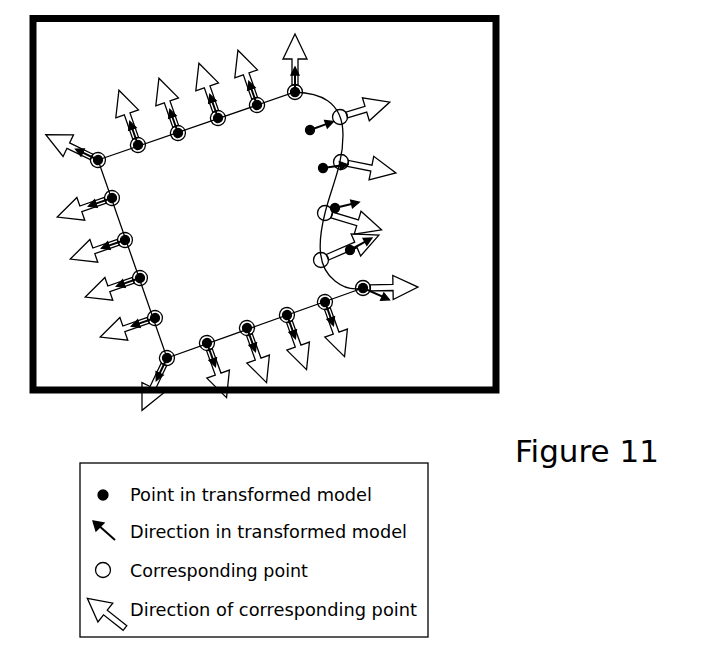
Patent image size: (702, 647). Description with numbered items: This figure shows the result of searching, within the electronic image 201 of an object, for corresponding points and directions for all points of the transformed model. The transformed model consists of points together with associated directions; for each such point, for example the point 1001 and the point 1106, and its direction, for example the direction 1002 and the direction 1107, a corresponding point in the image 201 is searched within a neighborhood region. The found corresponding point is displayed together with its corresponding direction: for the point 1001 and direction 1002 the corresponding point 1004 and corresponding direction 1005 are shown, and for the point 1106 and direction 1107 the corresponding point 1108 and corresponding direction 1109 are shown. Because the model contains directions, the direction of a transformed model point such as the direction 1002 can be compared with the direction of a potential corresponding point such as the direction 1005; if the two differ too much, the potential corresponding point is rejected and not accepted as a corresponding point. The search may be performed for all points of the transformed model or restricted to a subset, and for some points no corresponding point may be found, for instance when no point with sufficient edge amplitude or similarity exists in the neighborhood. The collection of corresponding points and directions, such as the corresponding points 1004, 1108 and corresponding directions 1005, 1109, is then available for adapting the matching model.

The image 201 is at (501, 53).
The point of the transformed model 1001 is at (306, 132).
The direction of the transformed model 1002 is at (320, 111).
The corresponding point 1004 is at (348, 124).
The corresponding direction 1005 is at (392, 96).
The point of the transformed model 1106 is at (359, 298).
The direction of the transformed model 1107 is at (378, 298).
The corresponding point 1108 is at (369, 278).
The corresponding direction 1109 is at (420, 286).